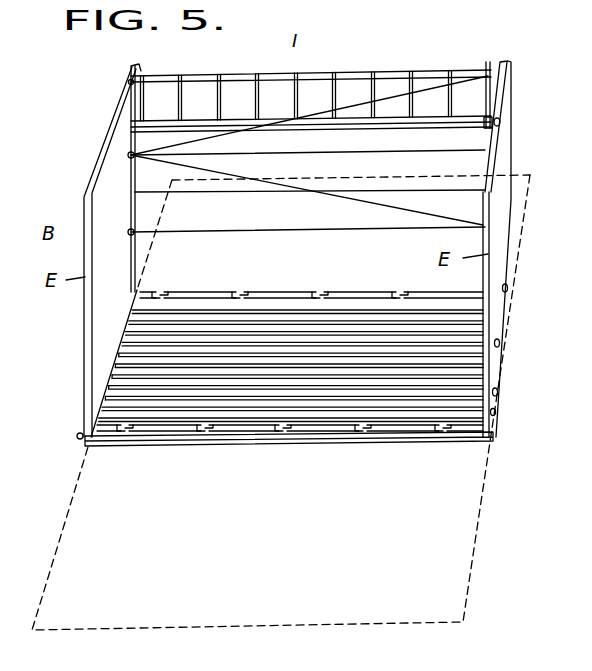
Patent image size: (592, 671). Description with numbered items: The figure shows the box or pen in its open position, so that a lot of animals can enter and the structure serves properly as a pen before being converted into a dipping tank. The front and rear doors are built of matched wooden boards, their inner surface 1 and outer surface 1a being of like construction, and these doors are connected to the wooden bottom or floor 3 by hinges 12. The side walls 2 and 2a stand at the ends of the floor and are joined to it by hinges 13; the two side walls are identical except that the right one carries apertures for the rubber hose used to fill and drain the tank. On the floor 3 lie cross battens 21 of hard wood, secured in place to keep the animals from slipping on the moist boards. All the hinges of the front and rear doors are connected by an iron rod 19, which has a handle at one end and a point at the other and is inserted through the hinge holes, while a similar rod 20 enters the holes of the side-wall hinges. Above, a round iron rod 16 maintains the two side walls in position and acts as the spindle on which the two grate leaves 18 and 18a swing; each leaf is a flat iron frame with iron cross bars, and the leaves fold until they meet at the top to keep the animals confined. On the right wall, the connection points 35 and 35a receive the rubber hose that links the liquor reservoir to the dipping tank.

The inner surface of door 1 is at (281, 402).
The outer surface of door 1a is at (333, 232).
The side wall 2 is at (511, 243).
The side wall 2a is at (90, 328).
The bottom or floor 3 is at (350, 398).
The hinges 12 is at (397, 292).
The hinges 13 is at (497, 391).
The round iron rod 16 is at (507, 124).
The leaf of grate 18 is at (431, 79).
The leaf of grate 18a is at (357, 72).
The iron rod 19 is at (78, 439).
The rod 20 is at (494, 418).
The cross battens 21 is at (116, 395).
The point of connection of rubber hose 35 is at (497, 347).
The point of connection of rubber hose 35a is at (509, 288).